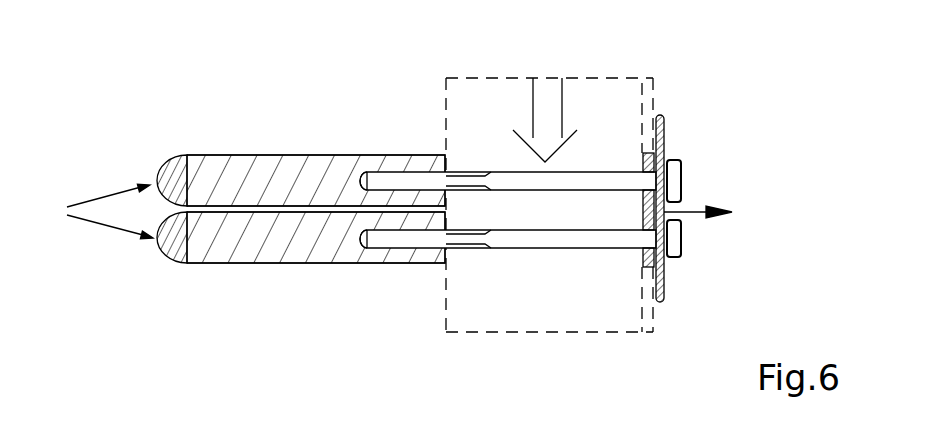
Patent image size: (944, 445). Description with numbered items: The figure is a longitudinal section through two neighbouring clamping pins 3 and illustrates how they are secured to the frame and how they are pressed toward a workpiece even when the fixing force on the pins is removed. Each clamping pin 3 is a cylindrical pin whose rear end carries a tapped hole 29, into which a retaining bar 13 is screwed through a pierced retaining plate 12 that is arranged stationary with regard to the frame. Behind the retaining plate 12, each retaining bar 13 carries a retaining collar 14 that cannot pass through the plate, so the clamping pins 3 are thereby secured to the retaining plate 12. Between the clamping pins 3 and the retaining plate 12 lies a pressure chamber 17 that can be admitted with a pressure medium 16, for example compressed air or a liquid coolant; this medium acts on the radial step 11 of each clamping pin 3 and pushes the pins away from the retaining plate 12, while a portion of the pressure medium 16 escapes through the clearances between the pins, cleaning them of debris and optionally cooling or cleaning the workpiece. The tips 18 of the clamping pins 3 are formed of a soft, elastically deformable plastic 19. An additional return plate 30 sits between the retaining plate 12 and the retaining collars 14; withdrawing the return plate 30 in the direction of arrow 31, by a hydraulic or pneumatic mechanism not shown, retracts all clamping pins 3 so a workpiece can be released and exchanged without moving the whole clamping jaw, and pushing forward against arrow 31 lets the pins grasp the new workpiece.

The clamping pin 3 is at (276, 200).
The step 11 is at (534, 195).
The retaining plate 12 is at (652, 264).
The retaining bar 13 is at (592, 183).
The retaining collar 14 is at (674, 182).
The pressure medium 16 is at (547, 115).
The pressure chamber 17 is at (460, 287).
The tip 18 is at (92, 211).
The plastic 19 is at (172, 176).
The tapped hole 29 is at (365, 178).
The return plate 30 is at (664, 140).
The arrow 31 is at (705, 207).